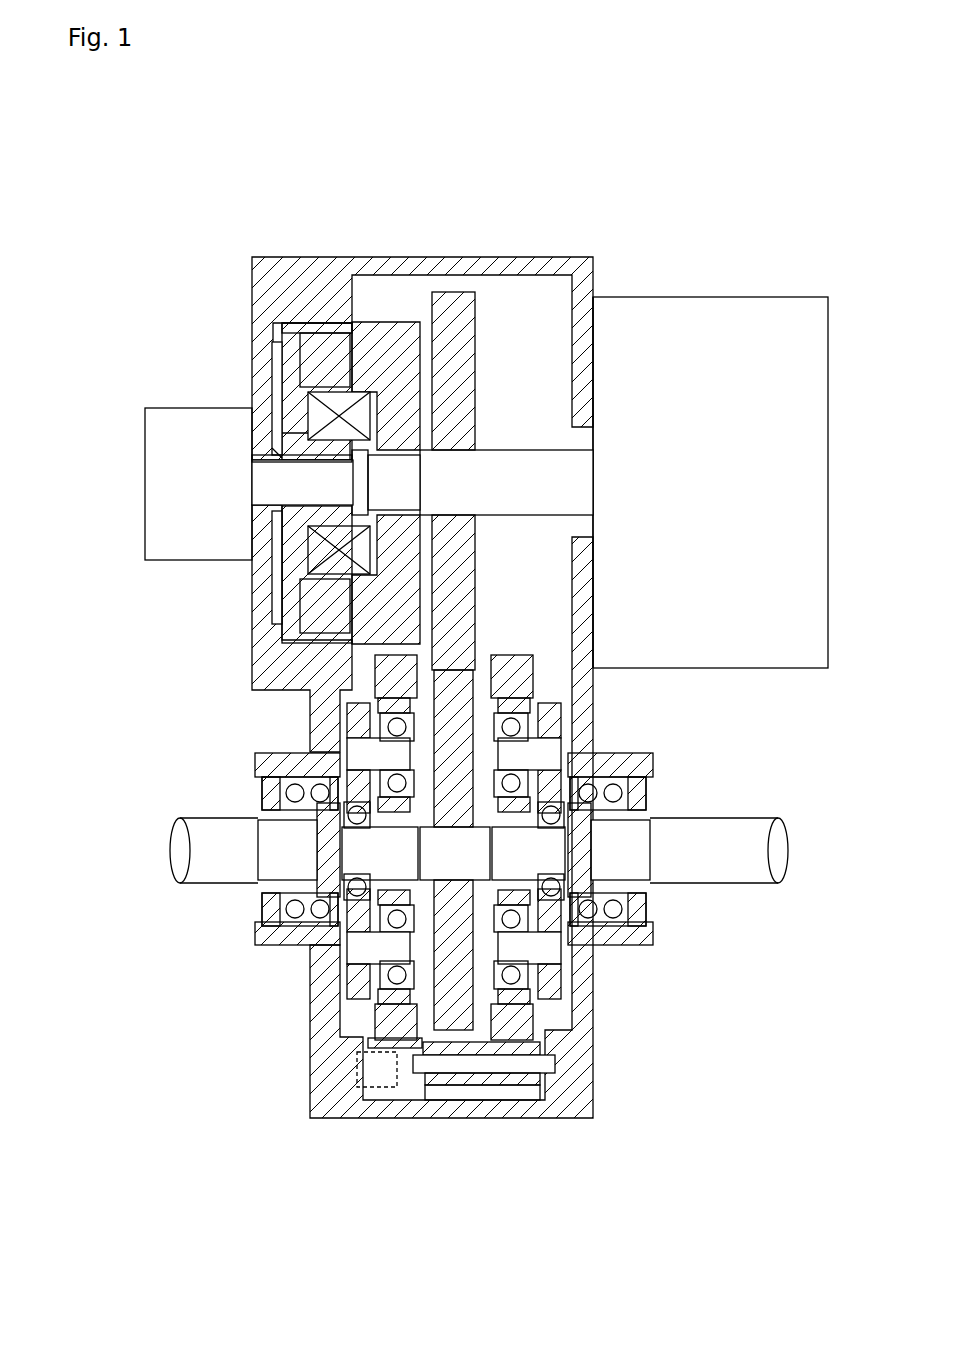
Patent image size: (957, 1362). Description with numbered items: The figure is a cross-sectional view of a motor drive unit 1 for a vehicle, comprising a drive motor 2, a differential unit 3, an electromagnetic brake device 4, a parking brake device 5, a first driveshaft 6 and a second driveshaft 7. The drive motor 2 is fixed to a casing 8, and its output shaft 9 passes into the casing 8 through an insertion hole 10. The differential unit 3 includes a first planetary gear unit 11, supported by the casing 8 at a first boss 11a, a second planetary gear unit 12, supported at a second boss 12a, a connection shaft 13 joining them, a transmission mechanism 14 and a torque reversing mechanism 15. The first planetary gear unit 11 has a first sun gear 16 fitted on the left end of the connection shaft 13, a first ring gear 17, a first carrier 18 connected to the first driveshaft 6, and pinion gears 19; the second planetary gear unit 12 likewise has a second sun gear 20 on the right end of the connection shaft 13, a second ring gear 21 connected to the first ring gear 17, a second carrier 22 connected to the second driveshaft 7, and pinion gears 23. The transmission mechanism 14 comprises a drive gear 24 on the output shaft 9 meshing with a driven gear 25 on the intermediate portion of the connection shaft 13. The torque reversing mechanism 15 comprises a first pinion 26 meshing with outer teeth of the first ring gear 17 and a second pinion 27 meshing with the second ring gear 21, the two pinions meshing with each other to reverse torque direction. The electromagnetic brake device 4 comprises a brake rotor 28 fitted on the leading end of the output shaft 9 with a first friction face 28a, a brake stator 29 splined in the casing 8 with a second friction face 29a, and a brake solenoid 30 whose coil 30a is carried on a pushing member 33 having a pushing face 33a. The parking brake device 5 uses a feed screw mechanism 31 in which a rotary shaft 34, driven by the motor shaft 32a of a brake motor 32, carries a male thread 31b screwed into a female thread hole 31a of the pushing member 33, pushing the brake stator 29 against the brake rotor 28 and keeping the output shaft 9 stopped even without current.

The motor drive unit 1 is at (630, 140).
The drive motor 2 is at (760, 322).
The differential unit 3 is at (365, 1050).
The electromagnetic brake device 4 is at (363, 394).
The parking brake device 5 is at (197, 432).
The first driveshaft 6 is at (212, 832).
The second driveshaft 7 is at (758, 872).
The casing 8 is at (535, 270).
The output shaft 9 is at (540, 465).
The insertion hole 10 is at (598, 432).
The first planetary gear unit 11 is at (375, 690).
The first boss 11a is at (275, 885).
The second planetary gear unit 12 is at (565, 985).
The second boss 12a is at (650, 895).
The connection shaft 13 is at (385, 945).
The transmission mechanism 14 is at (571, 523).
The torque reversing mechanism 15 is at (456, 1121).
The first sun gear 16 is at (300, 855).
The first ring gear 17 is at (380, 1018).
The first carrier 18 is at (300, 790).
The pinion gears 19 is at (360, 720).
The second sun gear 20 is at (615, 845).
The second ring gear 21 is at (560, 1030).
The second carrier 22 is at (620, 875).
The pinion gears 23 is at (455, 745).
The drive gear 24 is at (455, 625).
The driven gear 25 is at (510, 730).
The first pinion 26 is at (395, 1090).
The second pinion 27 is at (475, 1065).
The brake rotor 28 is at (400, 340).
The first friction face 28a is at (300, 625).
The brake stator 29 is at (310, 340).
The second friction face 29a is at (285, 600).
The brake solenoid 30 is at (352, 348).
The coil 30a is at (310, 405).
The feed screw mechanism 31 is at (275, 400).
The female thread hole 31a is at (370, 490).
The male thread 31b is at (300, 540).
The brake motor 32 is at (175, 425).
The motor shaft 32a is at (258, 482).
The pushing member 33 is at (255, 458).
The pushing face 33a is at (298, 350).
The rotary shaft 34 is at (400, 482).